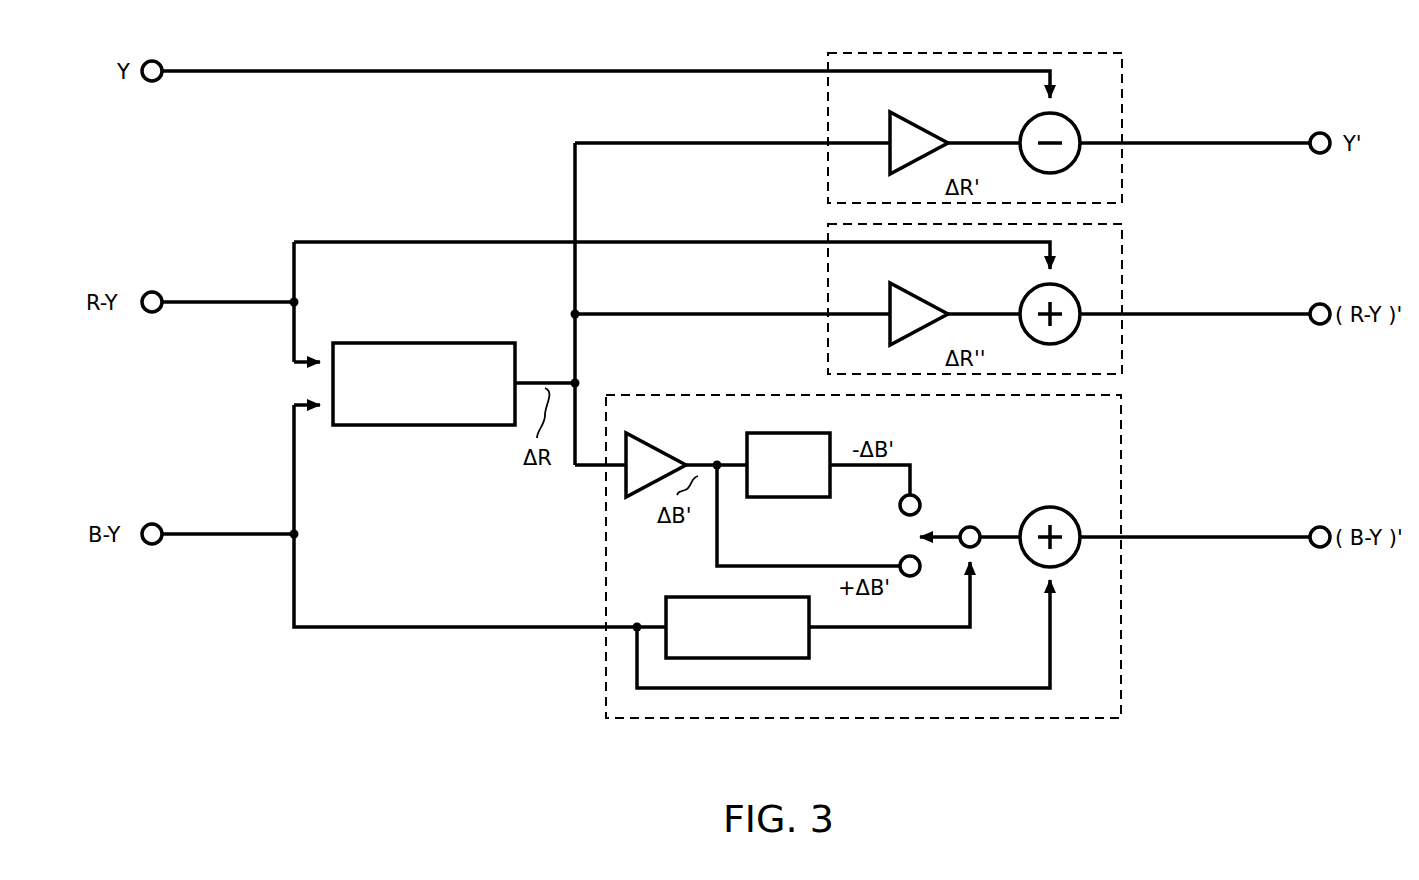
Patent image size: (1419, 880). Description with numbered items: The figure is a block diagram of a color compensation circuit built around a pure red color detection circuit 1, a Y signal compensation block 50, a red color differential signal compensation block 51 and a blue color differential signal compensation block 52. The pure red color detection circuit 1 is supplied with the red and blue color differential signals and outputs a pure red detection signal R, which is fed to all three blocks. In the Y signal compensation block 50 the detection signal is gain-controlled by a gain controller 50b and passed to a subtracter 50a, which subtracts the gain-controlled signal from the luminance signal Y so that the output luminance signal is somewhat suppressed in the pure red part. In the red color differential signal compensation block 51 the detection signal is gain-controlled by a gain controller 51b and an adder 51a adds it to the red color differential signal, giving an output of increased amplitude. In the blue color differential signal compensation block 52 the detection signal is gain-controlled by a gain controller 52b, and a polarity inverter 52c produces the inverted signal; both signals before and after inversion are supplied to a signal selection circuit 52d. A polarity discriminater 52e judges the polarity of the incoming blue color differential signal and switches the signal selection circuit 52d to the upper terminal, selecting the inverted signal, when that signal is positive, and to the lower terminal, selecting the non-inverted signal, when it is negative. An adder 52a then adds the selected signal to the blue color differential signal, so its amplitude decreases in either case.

The pure red color detection circuit 1 is at (425, 343).
The Y signal compensation block 50 is at (1122, 172).
The subtracter 50a is at (1083, 117).
The gain controller 50b is at (930, 130).
The (R-Y) signal compensation block 51 is at (1122, 343).
The adder 51a is at (1083, 288).
The gain controller 51b is at (930, 301).
The (B-Y) signal compensation block 52 is at (1121, 613).
The adder 52a is at (1070, 510).
The gain controller 52b is at (652, 447).
The polarity inverter 52c is at (768, 433).
The signal selection circuit 52d is at (970, 517).
The polarity discriminater 52e is at (717, 658).